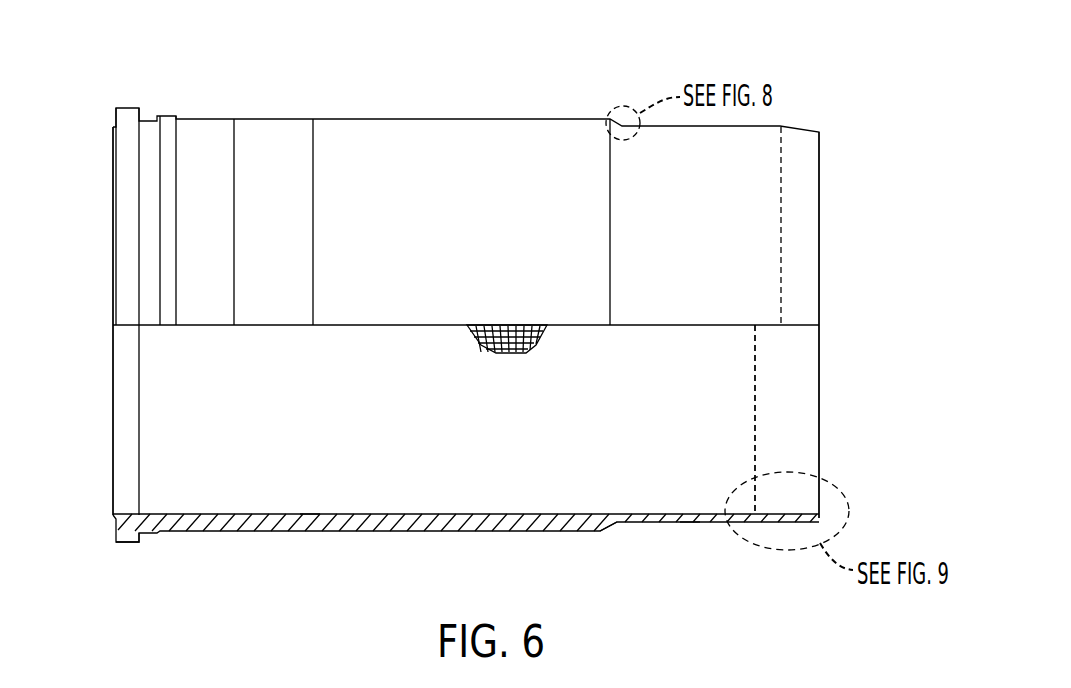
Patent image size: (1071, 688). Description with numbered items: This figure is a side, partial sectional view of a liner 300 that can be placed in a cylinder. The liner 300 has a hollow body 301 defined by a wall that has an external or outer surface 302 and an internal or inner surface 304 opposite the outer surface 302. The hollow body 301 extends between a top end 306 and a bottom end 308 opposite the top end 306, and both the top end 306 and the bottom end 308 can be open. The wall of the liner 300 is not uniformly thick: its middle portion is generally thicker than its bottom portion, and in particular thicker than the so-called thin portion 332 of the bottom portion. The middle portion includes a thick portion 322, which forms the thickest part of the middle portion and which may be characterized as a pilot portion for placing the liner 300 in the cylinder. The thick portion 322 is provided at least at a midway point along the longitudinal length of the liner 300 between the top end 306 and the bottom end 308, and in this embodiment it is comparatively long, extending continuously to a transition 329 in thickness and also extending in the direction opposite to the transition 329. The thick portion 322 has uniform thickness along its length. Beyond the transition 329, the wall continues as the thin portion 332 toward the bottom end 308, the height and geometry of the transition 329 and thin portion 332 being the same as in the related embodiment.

The liner 300 is at (102, 97).
The hollow body 301 is at (730, 398).
The outer surface 302 is at (290, 531).
The inner surface 304 is at (305, 513).
The top end 306 is at (113, 410).
The bottom end 308 is at (820, 181).
The thick portion 322 is at (442, 531).
The transition 329 is at (615, 524).
The thin portion 332 is at (690, 522).